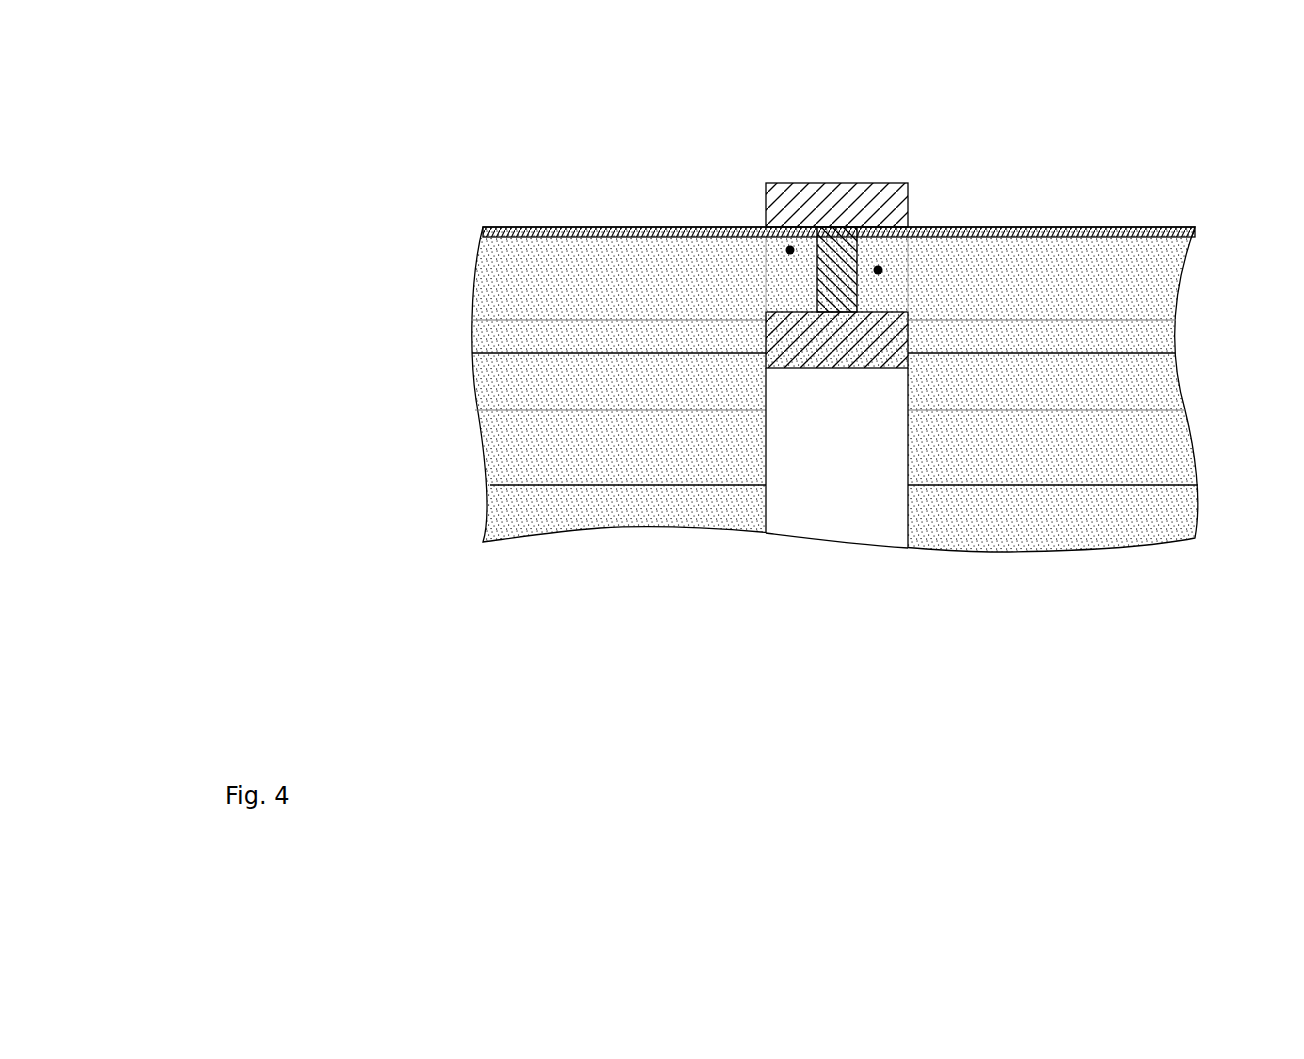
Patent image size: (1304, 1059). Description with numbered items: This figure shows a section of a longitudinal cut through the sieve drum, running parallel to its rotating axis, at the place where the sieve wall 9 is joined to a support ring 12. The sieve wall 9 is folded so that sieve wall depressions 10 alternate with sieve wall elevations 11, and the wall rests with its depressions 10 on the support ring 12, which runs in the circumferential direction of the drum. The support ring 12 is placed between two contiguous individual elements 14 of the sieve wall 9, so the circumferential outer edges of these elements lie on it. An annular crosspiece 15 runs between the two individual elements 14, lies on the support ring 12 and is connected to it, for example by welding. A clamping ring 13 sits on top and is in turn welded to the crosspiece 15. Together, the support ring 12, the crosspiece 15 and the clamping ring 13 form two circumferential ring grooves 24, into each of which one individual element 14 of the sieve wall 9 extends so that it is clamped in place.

The sieve wall 9 is at (1177, 518).
The sieve wall depressions 10 is at (1158, 320).
The sieve wall elevations 11 is at (1140, 227).
The support ring 12 is at (822, 518).
The clamping ring 13 is at (777, 197).
The individual elements 14 is at (527, 523).
The crosspiece 15 is at (830, 273).
The circumferential ring grooves 24 is at (790, 250).